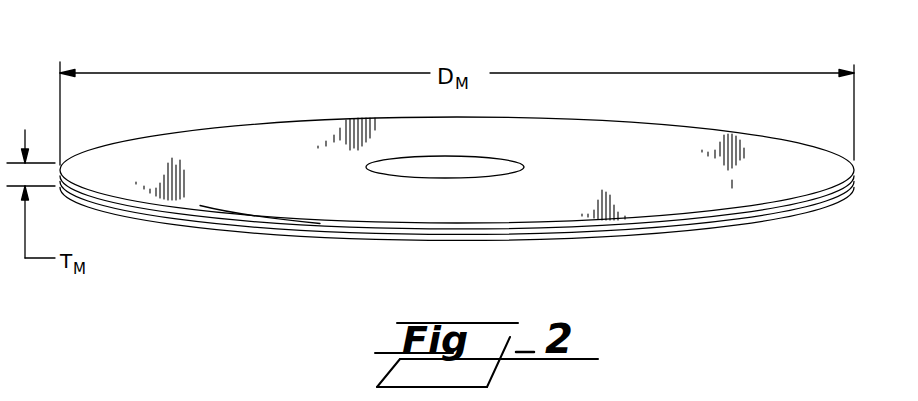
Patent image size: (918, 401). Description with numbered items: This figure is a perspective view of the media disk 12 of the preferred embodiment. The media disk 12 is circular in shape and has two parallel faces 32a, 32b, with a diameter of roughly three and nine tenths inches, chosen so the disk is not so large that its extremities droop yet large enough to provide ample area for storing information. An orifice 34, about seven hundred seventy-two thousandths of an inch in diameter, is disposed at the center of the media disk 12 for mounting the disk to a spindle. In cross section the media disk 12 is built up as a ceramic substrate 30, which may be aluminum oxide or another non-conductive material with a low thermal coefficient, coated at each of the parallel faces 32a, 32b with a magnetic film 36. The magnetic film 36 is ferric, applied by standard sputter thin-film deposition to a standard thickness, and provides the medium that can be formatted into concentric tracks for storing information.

The media disk 12 is at (231, 42).
The ceramic substrate 30 is at (227, 221).
The parallel face 32a is at (661, 218).
The parallel face 32b is at (693, 238).
The orifice 34 is at (503, 165).
The magnetic film 36 is at (250, 232).